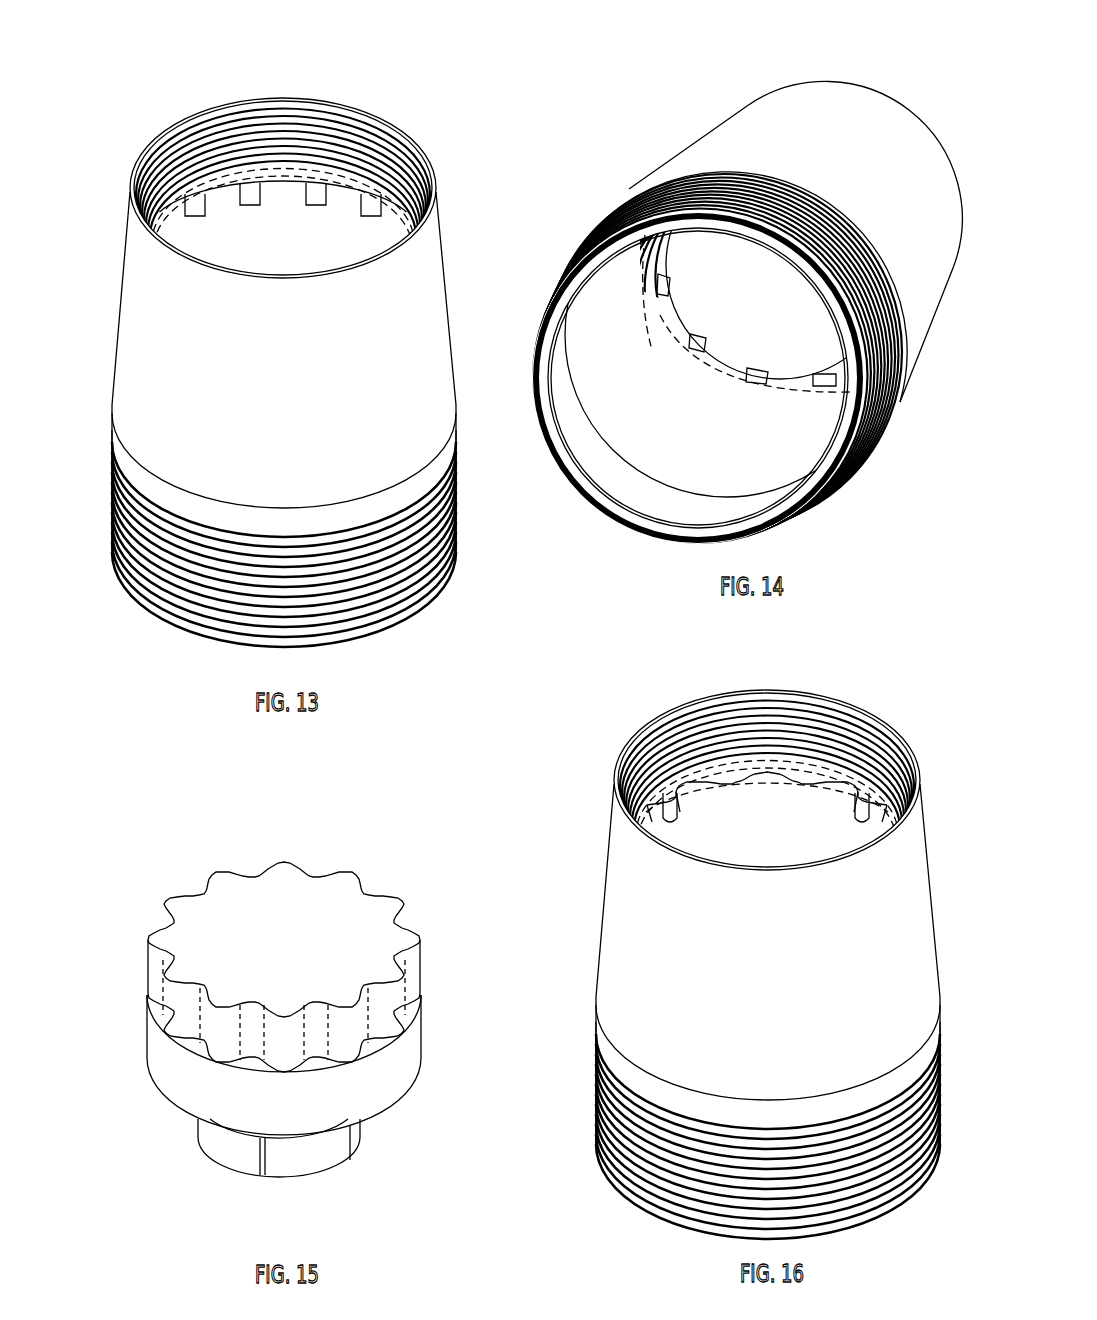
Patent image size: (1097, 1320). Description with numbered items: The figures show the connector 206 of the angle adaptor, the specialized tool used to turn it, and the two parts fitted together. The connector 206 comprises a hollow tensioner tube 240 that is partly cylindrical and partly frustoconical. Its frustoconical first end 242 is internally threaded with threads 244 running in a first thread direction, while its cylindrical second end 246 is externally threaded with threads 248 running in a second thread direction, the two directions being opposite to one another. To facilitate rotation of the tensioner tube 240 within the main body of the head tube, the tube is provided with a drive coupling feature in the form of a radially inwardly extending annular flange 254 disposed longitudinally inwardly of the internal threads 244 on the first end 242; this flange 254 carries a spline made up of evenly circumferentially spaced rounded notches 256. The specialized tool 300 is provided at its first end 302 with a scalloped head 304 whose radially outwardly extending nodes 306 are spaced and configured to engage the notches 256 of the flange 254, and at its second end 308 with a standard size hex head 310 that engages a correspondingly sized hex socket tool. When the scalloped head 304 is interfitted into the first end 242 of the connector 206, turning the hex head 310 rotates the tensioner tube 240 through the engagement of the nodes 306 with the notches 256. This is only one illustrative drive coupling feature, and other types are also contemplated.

In FIG. 13, the connector 206 is at (250, 360).
In FIG. 14, the connector 206 is at (747, 294).
In FIG. 16, the connector 206 is at (734, 956).
In FIG. 13, the tensioner tube 240 is at (120, 334).
In FIG. 14, the tensioner tube 240 is at (680, 135).
In FIG. 16, the tensioner tube 240 is at (734, 964).
In FIG. 13, the first end 242 is at (200, 108).
In FIG. 14, the first end 242 is at (817, 76).
In FIG. 16, the first end 242 is at (767, 762).
In FIG. 13, the internal threads 244 is at (330, 108).
In FIG. 14, the internal threads 244 is at (727, 320).
In FIG. 16, the internal threads 244 is at (767, 795).
In FIG. 13, the second end 246 is at (138, 610).
In FIG. 14, the second end 246 is at (616, 518).
In FIG. 16, the second end 246 is at (768, 1154).
In FIG. 13, the external threads 248 is at (112, 534).
In FIG. 14, the external threads 248 is at (820, 210).
In FIG. 16, the external threads 248 is at (737, 1092).
In FIG. 13, the annular flange 254 is at (292, 192).
In FIG. 14, the annular flange 254 is at (732, 372).
In FIG. 16, the annular flange 254 is at (767, 856).
In FIG. 13, the rounded notches 256 is at (248, 192).
In FIG. 14, the rounded notches 256 is at (654, 300).
In FIG. 16, the rounded notches 256 is at (766, 730).
In FIG. 15, the specialized tool 300 is at (252, 1020).
In FIG. 16, the specialized tool 300 is at (742, 806).
In FIG. 15, the first end 302 is at (145, 932).
In FIG. 15, the scalloped head 304 is at (268, 954).
In FIG. 16, the scalloped head 304 is at (752, 842).
In FIG. 15, the nodes 306 is at (323, 862).
In FIG. 16, the nodes 306 is at (738, 780).
In FIG. 15, the second end 308 is at (238, 1182).
In FIG. 15, the hex head 310 is at (208, 1137).